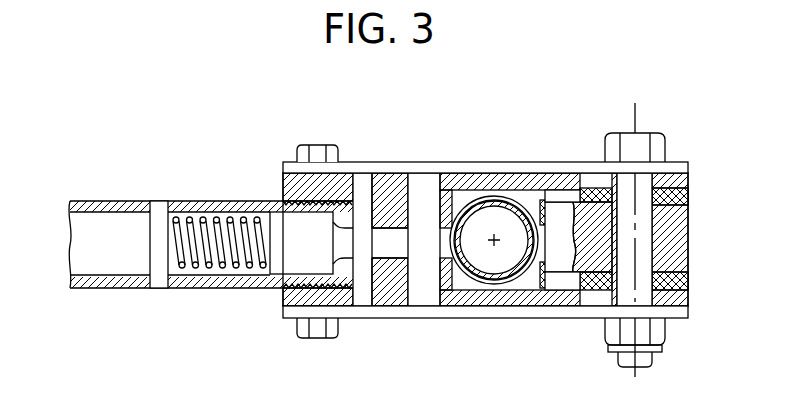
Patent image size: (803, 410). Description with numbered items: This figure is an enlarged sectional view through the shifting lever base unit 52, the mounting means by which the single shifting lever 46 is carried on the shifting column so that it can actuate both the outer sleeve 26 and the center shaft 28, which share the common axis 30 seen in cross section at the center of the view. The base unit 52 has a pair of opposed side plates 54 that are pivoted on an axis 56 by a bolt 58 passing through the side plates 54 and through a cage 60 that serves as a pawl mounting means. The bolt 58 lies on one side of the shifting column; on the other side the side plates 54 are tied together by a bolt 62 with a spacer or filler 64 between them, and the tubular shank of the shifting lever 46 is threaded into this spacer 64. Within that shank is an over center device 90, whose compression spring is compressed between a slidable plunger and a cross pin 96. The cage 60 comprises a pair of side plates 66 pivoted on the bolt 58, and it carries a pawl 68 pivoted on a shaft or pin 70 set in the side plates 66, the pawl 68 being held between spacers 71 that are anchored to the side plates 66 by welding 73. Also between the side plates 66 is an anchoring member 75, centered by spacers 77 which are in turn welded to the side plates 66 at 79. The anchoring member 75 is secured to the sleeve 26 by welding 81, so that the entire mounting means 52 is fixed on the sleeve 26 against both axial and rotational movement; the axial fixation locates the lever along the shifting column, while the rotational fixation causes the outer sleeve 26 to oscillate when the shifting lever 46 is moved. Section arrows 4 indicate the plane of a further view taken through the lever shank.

The section line 4- 4 is at (63, 242).
The outer sleeve 26 is at (507, 300).
The center shaft 28 is at (480, 306).
The common axis 30 is at (493, 234).
The shifting lever 46 is at (182, 201).
The base unit 52 is at (356, 339).
The side plates 54 is at (392, 165).
The axis 56 is at (633, 112).
The bolt 58 is at (640, 190).
The cage 60 is at (516, 168).
The bolt 62 is at (316, 147).
The spacer 64 is at (290, 205).
The side plates 66 is at (480, 170).
The pawl 68 is at (393, 242).
The shaft or pin 70 is at (425, 187).
The spacers 71 is at (393, 208).
The welding 73 is at (377, 308).
The anchoring member 75 is at (672, 222).
The spacers 77 is at (598, 310).
The welding 79 is at (563, 190).
The welding 81 is at (543, 306).
The over center device 90 is at (247, 291).
The cross pin 96 is at (163, 255).